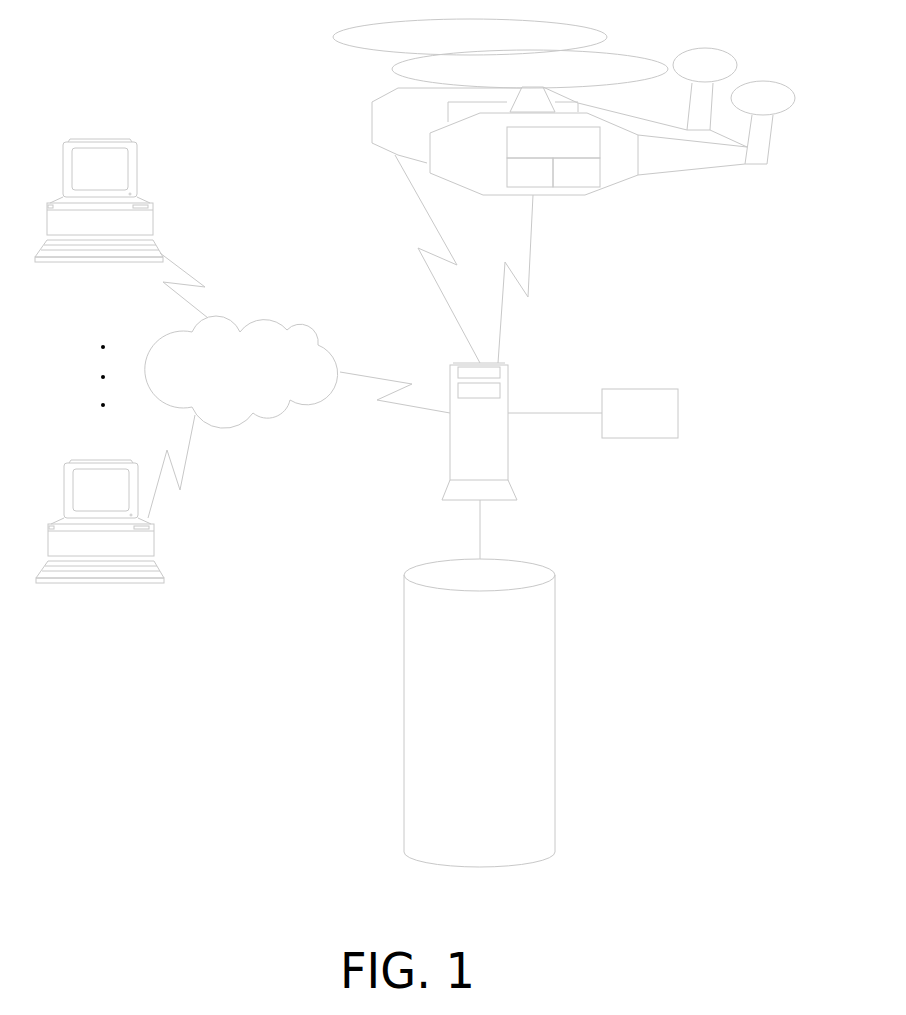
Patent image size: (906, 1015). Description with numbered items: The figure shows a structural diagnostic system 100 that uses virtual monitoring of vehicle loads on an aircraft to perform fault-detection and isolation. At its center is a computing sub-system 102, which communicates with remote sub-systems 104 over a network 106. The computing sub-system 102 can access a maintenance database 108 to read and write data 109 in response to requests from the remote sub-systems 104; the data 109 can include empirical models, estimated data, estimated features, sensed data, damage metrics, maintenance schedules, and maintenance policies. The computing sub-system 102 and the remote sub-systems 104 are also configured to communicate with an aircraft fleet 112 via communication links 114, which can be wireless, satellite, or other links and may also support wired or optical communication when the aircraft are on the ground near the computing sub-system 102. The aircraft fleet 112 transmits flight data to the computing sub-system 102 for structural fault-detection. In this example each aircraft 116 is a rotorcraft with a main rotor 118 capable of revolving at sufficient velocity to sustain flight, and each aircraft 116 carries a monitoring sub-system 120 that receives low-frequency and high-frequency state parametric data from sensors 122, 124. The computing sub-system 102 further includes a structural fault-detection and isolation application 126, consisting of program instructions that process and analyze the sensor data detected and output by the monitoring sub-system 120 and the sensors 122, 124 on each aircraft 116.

The structural diagnostic system 100 is at (163, 50).
The computing sub-system 102 is at (496, 458).
The remote sub-systems 104 is at (115, 178).
The network 106 is at (255, 378).
The database 108 is at (504, 703).
The data 109 is at (498, 656).
The aircraft fleet 112 is at (536, 107).
The communication links 114 is at (447, 247).
The aircraft 116 is at (414, 130).
The main rotor 118 is at (546, 80).
The monitoring sub-system 120 is at (570, 151).
The sensor 122 is at (546, 181).
The sensor 124 is at (593, 181).
The structural fault-detection and isolation application 126 is at (661, 425).